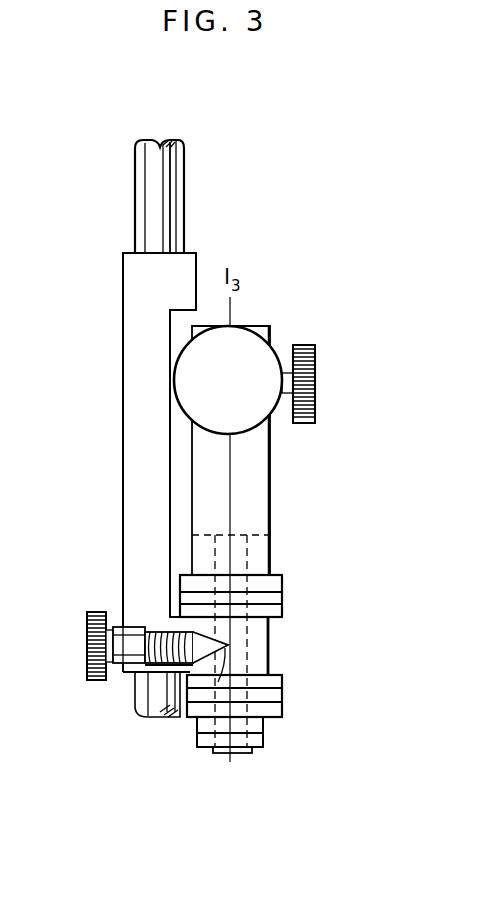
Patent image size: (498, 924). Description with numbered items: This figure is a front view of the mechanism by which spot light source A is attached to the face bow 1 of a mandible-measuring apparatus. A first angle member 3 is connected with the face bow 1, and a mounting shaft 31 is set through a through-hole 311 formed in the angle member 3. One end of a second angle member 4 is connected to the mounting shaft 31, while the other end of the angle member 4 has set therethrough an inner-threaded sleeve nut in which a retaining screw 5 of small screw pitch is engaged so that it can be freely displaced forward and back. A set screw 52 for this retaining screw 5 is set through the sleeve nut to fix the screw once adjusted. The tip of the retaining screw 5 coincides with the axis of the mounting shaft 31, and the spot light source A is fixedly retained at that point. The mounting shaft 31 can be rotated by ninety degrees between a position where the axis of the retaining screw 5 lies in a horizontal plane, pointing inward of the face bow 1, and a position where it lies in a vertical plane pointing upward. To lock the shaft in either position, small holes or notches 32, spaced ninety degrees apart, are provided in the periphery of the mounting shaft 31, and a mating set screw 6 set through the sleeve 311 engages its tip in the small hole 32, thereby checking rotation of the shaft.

The face bow 1 is at (139, 184).
The angle member 3 is at (130, 587).
The angle member 4 is at (253, 478).
The retaining screw 5 is at (270, 357).
The set screw 52 is at (317, 350).
The mounting shaft 31 is at (248, 563).
The through-hole (sleeve) 311 is at (270, 628).
The small hole (notch) 32 is at (218, 682).
The set screw 6 is at (87, 644).